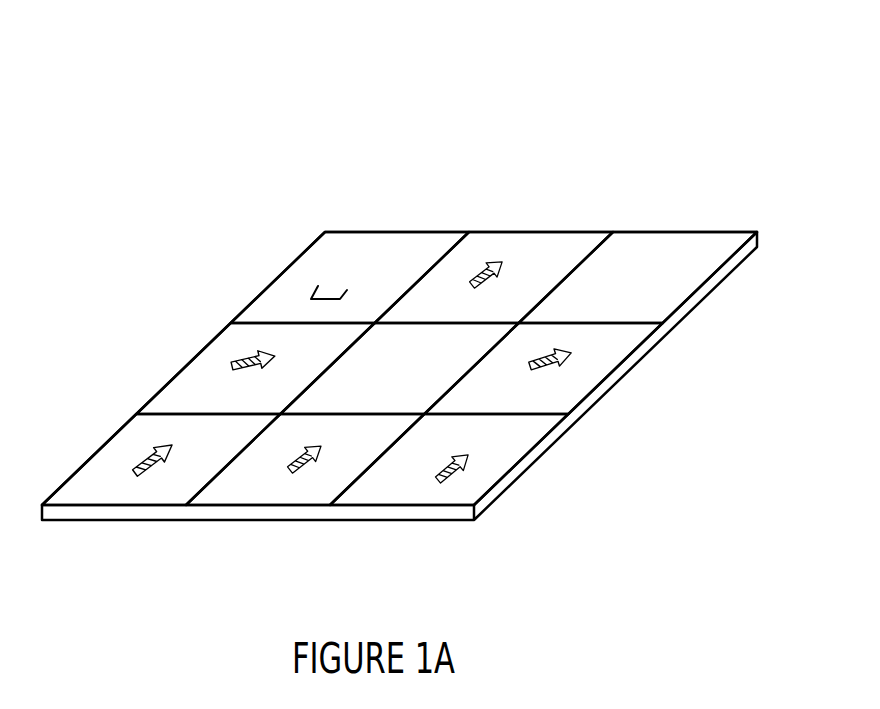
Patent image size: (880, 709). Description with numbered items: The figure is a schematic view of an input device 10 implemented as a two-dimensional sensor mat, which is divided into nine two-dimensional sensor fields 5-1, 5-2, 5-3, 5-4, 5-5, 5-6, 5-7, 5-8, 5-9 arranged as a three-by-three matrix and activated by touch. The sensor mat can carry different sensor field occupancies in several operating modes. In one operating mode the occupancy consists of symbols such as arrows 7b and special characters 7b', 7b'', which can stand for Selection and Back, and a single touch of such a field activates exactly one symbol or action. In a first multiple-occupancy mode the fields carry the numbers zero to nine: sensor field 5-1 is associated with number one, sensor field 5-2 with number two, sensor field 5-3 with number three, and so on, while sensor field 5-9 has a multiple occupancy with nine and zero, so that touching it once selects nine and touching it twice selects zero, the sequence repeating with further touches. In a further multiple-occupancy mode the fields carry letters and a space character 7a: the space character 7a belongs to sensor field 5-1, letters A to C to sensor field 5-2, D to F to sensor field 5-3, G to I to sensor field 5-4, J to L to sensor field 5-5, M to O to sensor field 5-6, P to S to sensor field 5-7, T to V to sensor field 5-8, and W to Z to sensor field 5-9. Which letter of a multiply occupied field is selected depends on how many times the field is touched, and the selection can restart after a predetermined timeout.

The input device 10 is at (396, 88).
The sensor field 5-1 is at (352, 240).
The sensor field 5-2 is at (580, 233).
The sensor field 5-3 is at (705, 233).
The sensor field 5-4 is at (178, 400).
The sensor field 5-5 is at (410, 340).
The sensor field 5-6 is at (635, 333).
The sensor field 5-7 is at (72, 495).
The sensor field 5-8 is at (222, 495).
The sensor field 5-9 is at (543, 426).
The space character 7a is at (316, 284).
The arrow 7b is at (414, 370).
The special character 7b' is at (126, 438).
The special character 7b'' is at (506, 480).